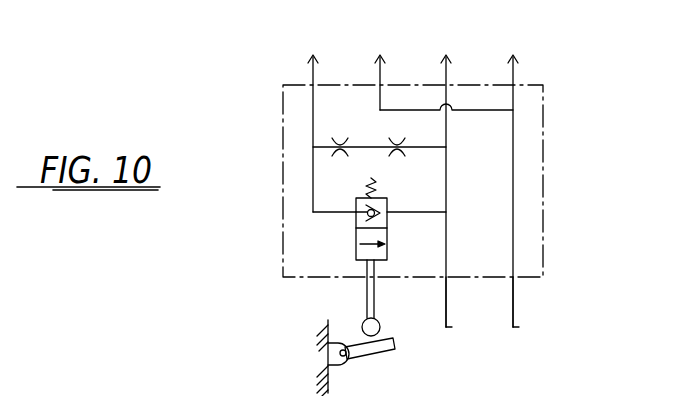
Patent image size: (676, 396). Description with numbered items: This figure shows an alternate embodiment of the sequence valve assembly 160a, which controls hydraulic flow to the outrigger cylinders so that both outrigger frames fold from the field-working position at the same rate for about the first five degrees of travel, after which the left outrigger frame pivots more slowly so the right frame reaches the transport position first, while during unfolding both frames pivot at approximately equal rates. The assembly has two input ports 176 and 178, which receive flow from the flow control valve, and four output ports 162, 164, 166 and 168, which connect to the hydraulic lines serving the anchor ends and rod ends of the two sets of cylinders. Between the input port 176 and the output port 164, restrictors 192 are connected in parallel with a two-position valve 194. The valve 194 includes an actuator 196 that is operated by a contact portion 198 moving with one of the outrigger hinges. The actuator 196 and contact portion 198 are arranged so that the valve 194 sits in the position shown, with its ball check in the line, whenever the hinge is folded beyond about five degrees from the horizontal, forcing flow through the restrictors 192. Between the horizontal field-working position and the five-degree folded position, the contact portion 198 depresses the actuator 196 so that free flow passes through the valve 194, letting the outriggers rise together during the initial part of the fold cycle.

The sequence valve assembly 160a is at (283, 127).
The output port 162 is at (397, 27).
The output port 164 is at (334, 38).
The output port 166 is at (449, 70).
The output port 168 is at (515, 68).
The input port 176 is at (446, 300).
The input port 178 is at (513, 300).
The restrictors 192 is at (400, 140).
The two-position valve 194 is at (356, 227).
The actuator 196 is at (367, 292).
The contact portion 198 is at (385, 352).